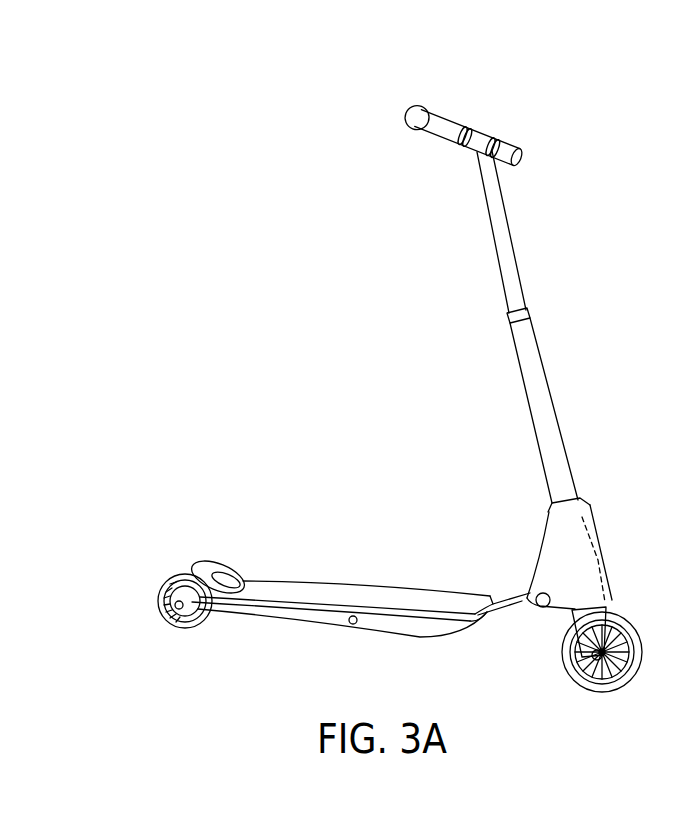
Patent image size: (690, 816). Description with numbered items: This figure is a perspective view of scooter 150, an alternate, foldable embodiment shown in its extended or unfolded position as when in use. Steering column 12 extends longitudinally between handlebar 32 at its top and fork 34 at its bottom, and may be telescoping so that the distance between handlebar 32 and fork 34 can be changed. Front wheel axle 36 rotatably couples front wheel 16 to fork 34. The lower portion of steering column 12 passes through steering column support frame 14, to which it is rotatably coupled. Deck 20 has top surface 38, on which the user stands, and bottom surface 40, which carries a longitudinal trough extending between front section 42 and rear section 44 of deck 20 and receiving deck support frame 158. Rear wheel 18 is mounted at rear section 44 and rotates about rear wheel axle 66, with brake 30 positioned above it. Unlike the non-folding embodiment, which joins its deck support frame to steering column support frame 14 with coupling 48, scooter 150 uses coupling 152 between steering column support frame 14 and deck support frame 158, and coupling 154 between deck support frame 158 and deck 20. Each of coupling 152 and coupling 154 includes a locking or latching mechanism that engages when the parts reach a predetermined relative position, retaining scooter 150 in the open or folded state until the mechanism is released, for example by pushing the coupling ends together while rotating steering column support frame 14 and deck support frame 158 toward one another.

The scooter 150 is at (292, 345).
The handlebar 32 is at (507, 147).
The steering column 12 is at (537, 346).
The steering column support frame 14 is at (596, 528).
The fork 34 is at (610, 606).
The front wheel 16 is at (619, 664).
The front wheel axle 36 is at (600, 680).
The rear wheel 18 is at (186, 625).
The rear wheel axle 66 is at (176, 618).
The rear section 44 is at (197, 558).
The brake 30 is at (228, 575).
The deck 20 is at (342, 600).
The top surface 38 is at (285, 586).
The front section 42 is at (490, 595).
The bottom surface 40 is at (342, 651).
The coupling 48 is at (400, 640).
The coupling 154 is at (352, 625).
The deck support frame 158 is at (514, 601).
The coupling 152 is at (540, 606).